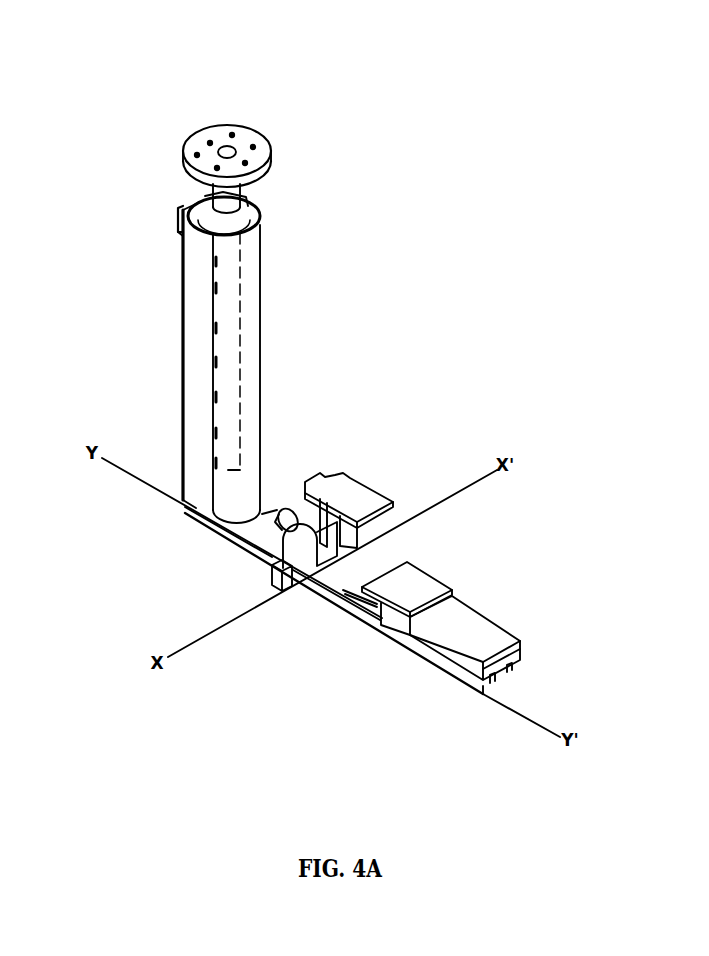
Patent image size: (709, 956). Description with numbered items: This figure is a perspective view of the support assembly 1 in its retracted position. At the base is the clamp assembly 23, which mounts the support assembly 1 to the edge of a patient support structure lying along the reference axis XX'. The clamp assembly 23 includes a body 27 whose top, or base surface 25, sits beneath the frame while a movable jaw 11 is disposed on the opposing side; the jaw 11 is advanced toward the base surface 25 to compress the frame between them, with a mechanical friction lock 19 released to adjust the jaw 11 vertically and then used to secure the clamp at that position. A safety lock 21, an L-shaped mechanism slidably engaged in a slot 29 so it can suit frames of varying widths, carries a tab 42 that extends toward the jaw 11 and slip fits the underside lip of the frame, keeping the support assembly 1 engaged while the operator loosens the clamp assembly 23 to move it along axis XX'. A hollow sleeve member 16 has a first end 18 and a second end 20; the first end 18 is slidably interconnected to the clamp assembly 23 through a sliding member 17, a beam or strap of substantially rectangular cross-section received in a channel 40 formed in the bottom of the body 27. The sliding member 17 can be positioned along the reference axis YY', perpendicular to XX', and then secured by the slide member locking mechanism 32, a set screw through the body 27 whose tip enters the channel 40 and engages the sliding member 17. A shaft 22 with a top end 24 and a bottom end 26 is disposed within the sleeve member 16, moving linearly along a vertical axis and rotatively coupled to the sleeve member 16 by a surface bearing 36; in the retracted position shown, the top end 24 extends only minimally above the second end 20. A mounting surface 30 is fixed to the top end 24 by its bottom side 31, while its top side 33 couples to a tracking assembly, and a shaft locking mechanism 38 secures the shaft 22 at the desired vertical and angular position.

The support assembly 1 is at (416, 140).
The movable jaw 11 is at (370, 497).
The hollow sleeve member 16 is at (252, 378).
The sliding member 17 is at (256, 528).
The first end of sleeve member 18 is at (196, 516).
The mechanical friction lock 19 is at (287, 512).
The second end of sleeve member 20 is at (257, 227).
The safety lock 21 is at (441, 560).
The shaft 22 is at (203, 198).
The clamp assembly 23 is at (485, 722).
The top end of shaft 24 is at (218, 199).
The top/base surface 25 is at (470, 624).
The bottom end of shaft 26 is at (213, 470).
The body 27 is at (432, 647).
The slot 29 is at (374, 600).
The mounting surface 30 is at (250, 108).
The bottom side of mounting surface 31 is at (272, 122).
The slide member locking mechanism 32 is at (282, 592).
The top side of mounting surface 33 is at (200, 134).
The surface bearing 36 is at (193, 205).
The shaft locking mechanism 38 is at (179, 231).
The channel 40 is at (512, 670).
The tab 42 is at (407, 560).